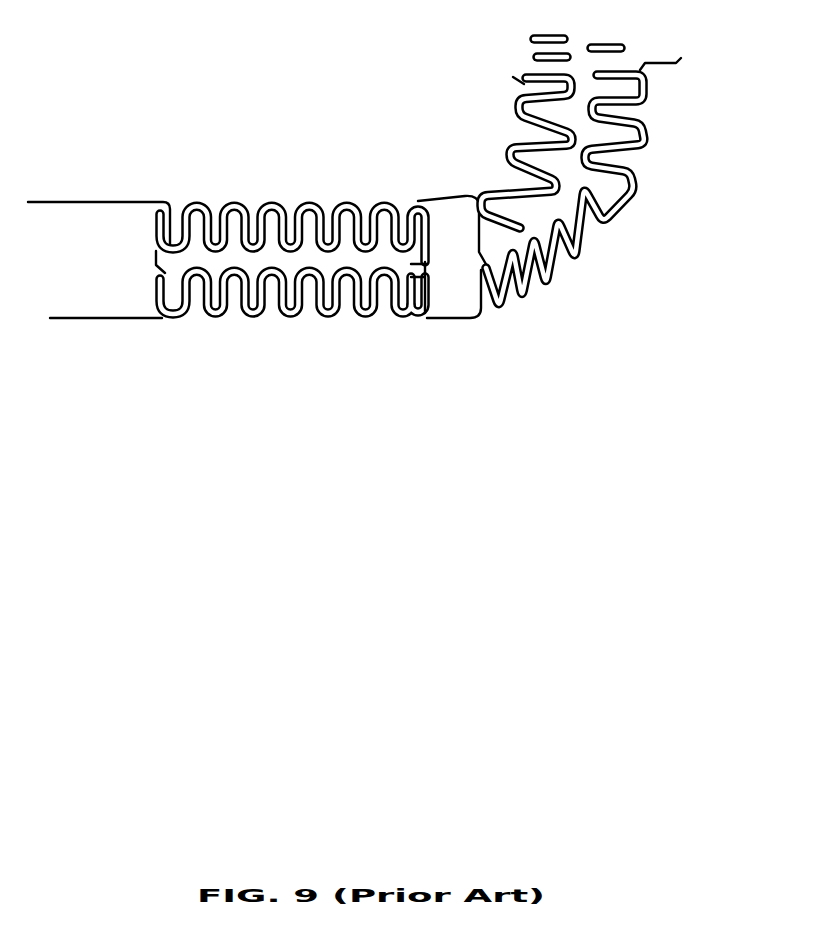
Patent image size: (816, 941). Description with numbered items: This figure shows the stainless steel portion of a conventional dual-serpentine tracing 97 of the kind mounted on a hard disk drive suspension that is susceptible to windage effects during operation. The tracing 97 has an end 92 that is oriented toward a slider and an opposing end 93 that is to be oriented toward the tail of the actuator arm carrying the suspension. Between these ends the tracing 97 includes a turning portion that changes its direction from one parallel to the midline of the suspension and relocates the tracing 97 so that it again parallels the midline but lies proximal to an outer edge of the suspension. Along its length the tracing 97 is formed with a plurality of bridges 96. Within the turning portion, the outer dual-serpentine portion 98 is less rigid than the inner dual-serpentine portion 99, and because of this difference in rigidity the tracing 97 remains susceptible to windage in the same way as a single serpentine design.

The end 92 is at (120, 272).
The opposing end 93 is at (597, 27).
The bridges 96 is at (492, 205).
The dual-serpentine tracing 97 is at (246, 57).
The outer dual-serpentine portion 98 is at (445, 212).
The inner dual-serpentine portion 99 is at (468, 300).